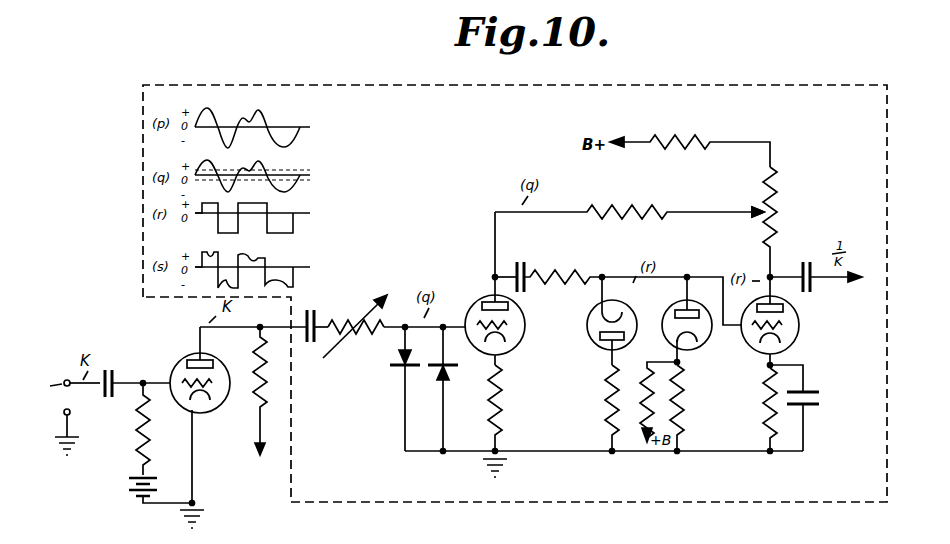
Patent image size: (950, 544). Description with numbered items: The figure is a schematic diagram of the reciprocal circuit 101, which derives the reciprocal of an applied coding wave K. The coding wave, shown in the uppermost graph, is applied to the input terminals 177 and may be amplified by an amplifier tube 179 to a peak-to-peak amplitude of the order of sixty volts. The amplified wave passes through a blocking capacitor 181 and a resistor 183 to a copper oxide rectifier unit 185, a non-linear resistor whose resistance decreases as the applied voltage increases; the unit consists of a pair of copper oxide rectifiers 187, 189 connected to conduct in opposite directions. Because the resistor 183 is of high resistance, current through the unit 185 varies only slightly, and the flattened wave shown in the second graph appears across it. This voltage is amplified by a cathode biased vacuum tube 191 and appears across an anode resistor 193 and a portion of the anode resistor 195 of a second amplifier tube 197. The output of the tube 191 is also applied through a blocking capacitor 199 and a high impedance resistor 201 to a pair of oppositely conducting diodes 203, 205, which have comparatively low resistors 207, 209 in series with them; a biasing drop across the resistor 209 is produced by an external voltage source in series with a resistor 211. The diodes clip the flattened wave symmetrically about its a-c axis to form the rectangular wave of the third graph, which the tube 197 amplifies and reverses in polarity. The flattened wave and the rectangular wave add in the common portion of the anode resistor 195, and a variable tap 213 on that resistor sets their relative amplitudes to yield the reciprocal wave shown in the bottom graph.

The reciprocal circuit 101 is at (656, 506).
The input terminals 177 is at (63, 412).
The amplifier tube 179 is at (176, 362).
The blocking capacitor 181 is at (313, 309).
The resistor 183 is at (358, 313).
The copper oxide rectifier unit 185 is at (457, 372).
The copper oxide rectifier 187 is at (398, 378).
The copper oxide rectifier 189 is at (475, 408).
The cathode biased vacuum tube 191 is at (502, 355).
The anode resistor 193 is at (629, 199).
The anode resistor 195 is at (780, 218).
The second amplifier tube 197 is at (800, 334).
The blocking capacitor 199 is at (535, 254).
The high impedance resistor 201 is at (567, 271).
The diode 203 is at (588, 336).
The diode 205 is at (703, 345).
The resistor 207 is at (602, 412).
The resistor 209 is at (688, 414).
The resistor 211 is at (642, 378).
The variable tap 213 is at (756, 209).